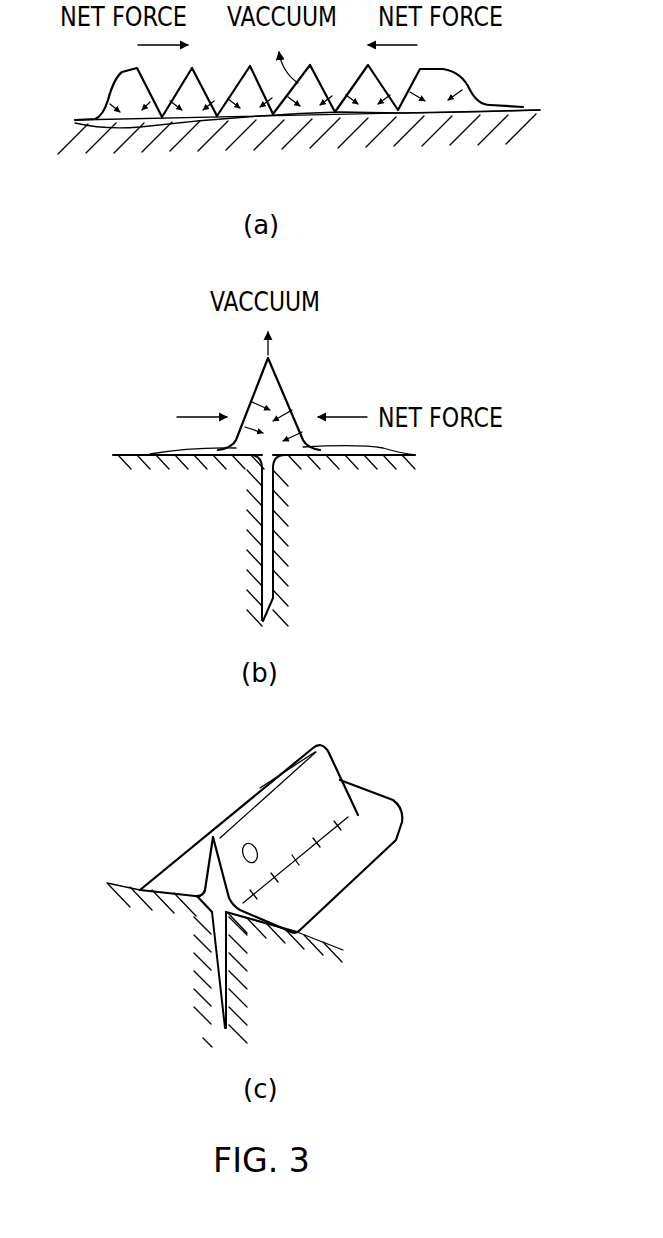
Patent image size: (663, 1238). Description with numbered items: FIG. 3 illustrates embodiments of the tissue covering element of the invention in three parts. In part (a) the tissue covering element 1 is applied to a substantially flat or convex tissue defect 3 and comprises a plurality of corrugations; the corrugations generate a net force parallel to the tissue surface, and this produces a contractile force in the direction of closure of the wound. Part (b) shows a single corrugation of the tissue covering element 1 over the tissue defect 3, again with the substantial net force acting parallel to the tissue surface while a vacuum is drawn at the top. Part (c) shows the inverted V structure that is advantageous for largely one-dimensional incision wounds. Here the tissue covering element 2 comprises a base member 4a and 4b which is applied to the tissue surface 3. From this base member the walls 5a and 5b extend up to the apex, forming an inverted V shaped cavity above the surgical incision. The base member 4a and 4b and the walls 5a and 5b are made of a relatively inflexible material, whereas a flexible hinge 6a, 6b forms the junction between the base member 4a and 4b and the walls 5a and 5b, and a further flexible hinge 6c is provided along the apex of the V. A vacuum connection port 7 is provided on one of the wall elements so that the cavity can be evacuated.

The tissue covering element 1 is at (468, 104).
The tissue covering element 2 is at (124, 856).
The tissue defect 3 is at (377, 150).
The base member 4a is at (160, 893).
The base member 4b is at (300, 910).
The wall 5a is at (210, 857).
The wall 5b is at (315, 778).
The flexible hinge 6a is at (198, 893).
The flexible hinge 6b is at (290, 875).
The flexible hinge 6c is at (273, 798).
The vacuum connection port 7 is at (247, 842).